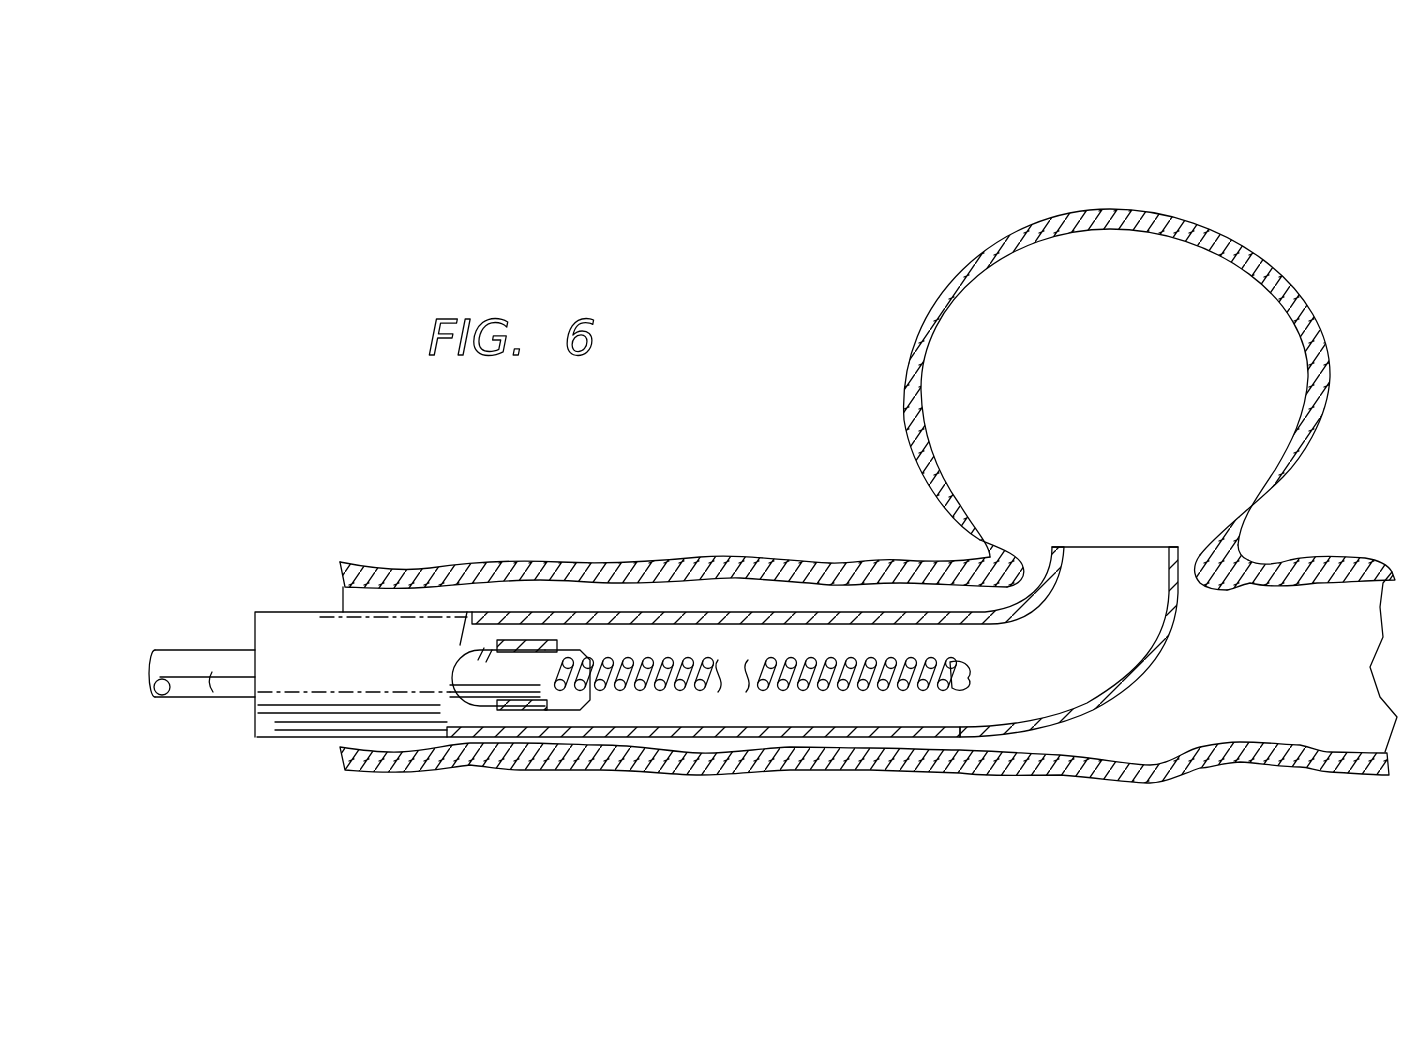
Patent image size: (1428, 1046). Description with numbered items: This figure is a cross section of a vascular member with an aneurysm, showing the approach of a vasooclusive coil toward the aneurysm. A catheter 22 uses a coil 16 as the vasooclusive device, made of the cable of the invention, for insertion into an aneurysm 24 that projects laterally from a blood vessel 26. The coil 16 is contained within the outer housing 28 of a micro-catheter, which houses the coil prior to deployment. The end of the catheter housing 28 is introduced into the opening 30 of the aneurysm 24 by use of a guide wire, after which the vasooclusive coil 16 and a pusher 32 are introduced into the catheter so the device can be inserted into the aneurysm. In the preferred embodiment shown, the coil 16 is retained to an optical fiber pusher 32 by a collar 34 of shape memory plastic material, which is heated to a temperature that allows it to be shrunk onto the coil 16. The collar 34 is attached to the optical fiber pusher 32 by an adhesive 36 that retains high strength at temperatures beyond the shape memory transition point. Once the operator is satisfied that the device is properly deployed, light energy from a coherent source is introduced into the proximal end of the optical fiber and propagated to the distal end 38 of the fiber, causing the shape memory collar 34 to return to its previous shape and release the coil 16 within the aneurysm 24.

The coil 16 is at (780, 688).
The catheter 22 is at (300, 590).
The aneurysm 24 is at (952, 270).
The blood vessel 26 is at (1347, 557).
The outer housing 28 is at (663, 727).
The opening 30 is at (997, 560).
The pusher 32 is at (185, 693).
The collar 34 is at (557, 643).
The adhesive 36 is at (458, 642).
The distal end 38 is at (542, 690).